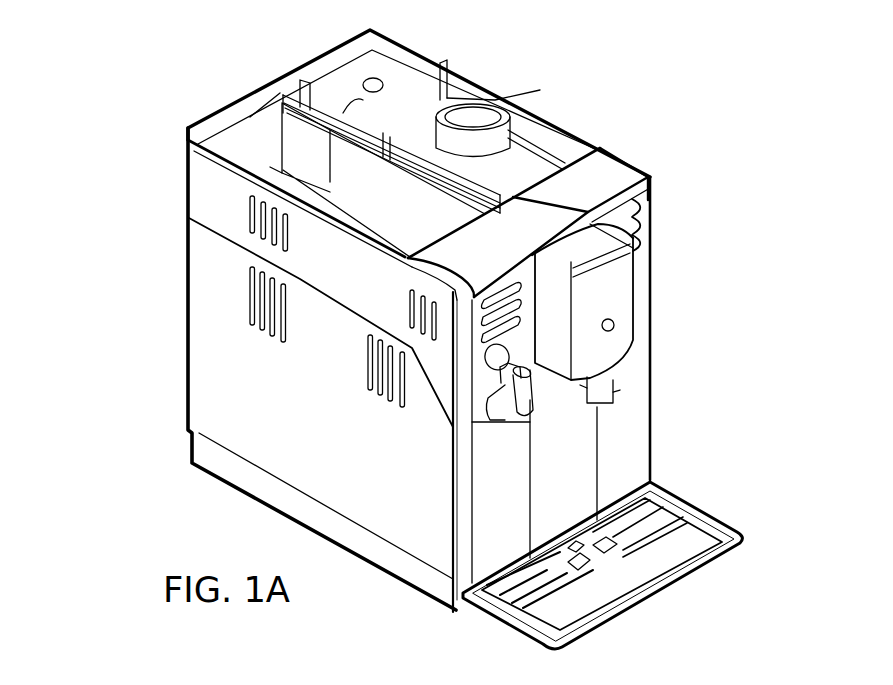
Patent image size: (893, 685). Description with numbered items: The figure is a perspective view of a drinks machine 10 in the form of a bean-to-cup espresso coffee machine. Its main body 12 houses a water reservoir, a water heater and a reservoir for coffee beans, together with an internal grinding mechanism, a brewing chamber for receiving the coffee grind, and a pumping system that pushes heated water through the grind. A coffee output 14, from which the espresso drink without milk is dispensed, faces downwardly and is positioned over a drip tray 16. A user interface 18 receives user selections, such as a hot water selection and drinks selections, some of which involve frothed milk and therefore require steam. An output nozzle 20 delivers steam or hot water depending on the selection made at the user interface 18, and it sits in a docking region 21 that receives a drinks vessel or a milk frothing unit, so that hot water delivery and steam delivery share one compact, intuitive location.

The drinks machine 10 is at (557, 77).
The main body 12 is at (190, 333).
The coffee output 14 is at (590, 407).
The drip tray 16 is at (705, 526).
The user interface 18 is at (655, 225).
The output nozzle 20 is at (503, 403).
The docking region 21 is at (509, 481).